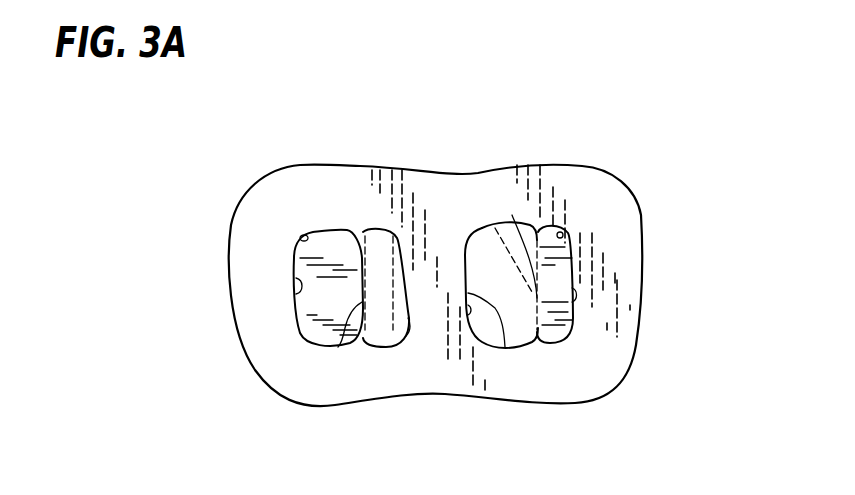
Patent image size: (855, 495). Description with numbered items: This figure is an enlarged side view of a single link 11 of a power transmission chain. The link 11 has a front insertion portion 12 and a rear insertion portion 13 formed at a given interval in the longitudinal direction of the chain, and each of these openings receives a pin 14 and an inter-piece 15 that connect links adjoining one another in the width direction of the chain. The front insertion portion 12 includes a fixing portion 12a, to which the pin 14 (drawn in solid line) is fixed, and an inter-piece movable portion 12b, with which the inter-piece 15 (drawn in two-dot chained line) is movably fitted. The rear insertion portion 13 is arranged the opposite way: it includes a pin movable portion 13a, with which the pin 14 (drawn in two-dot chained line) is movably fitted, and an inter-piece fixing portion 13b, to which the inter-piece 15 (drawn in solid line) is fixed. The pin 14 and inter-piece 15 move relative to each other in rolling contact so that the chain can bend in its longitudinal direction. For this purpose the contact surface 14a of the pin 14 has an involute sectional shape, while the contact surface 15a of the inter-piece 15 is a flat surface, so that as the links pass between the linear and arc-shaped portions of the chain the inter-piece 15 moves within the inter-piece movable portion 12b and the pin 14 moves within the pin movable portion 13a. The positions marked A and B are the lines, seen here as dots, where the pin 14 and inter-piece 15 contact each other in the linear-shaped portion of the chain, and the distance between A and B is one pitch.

The link 11 is at (641, 247).
The front insertion portion 12 is at (293, 242).
The fixing portion 12a is at (298, 296).
The inter-piece movable portion 12b is at (400, 343).
The rear insertion portion 13 is at (563, 232).
The pin movable portion 13a is at (513, 347).
The inter-piece fixing portion 13b is at (573, 313).
The pin 14 is at (348, 325).
The contact surface of the pin 14a is at (347, 237).
The inter-piece 15 is at (380, 333).
The contact surface of the inter-piece 15a is at (512, 215).
The contact line A is at (338, 347).
The contact line B is at (540, 322).